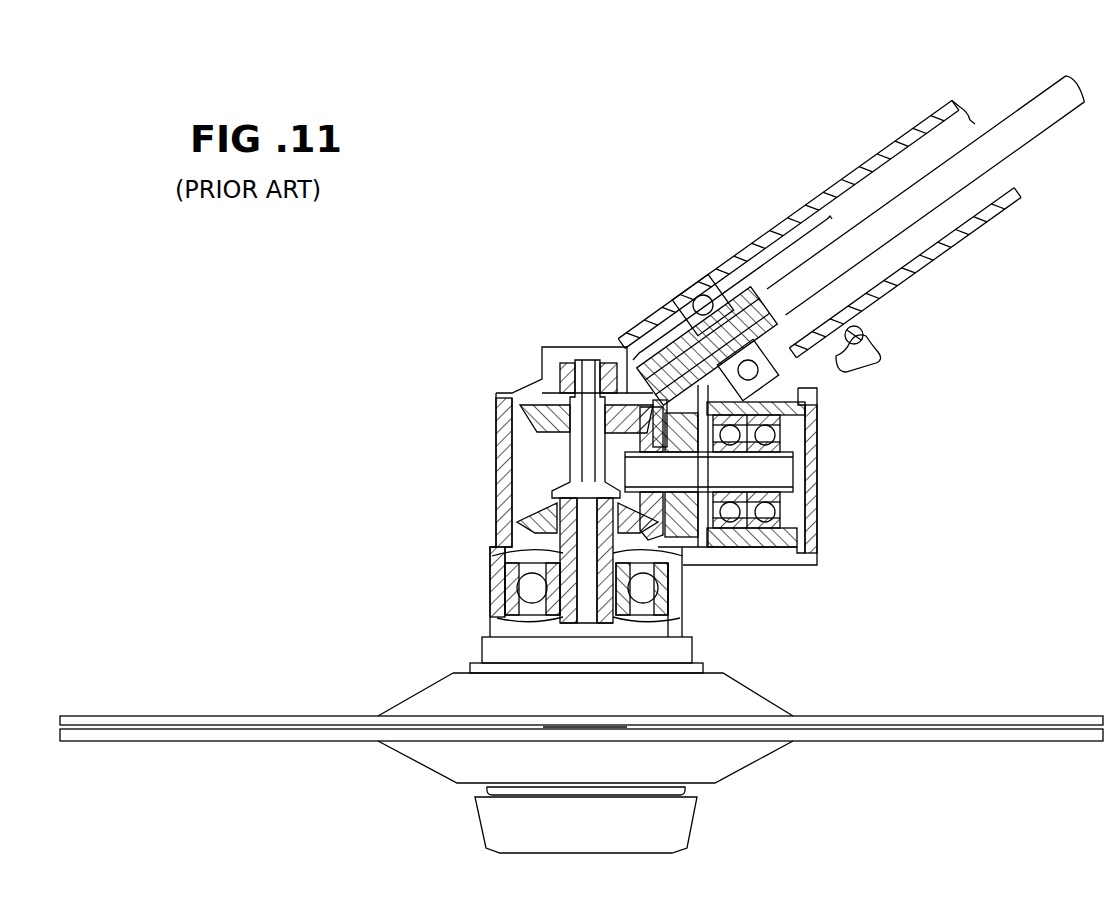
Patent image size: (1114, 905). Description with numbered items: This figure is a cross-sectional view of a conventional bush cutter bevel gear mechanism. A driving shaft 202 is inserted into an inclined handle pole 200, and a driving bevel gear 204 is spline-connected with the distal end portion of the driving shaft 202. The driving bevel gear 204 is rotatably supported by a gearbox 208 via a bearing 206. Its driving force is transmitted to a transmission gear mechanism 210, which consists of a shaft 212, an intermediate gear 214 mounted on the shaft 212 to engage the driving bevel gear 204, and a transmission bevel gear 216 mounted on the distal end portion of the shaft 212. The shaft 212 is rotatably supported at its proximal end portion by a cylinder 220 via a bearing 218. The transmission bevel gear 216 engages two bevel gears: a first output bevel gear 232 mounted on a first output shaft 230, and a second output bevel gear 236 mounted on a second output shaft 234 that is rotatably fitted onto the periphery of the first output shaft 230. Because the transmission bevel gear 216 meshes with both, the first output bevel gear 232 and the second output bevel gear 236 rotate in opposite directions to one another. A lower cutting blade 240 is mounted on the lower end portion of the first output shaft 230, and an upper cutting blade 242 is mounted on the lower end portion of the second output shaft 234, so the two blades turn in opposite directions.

The handle pole 200 is at (900, 150).
The driving shaft 202 is at (1033, 110).
The driving bevel gear 204 is at (653, 342).
The bearing 206 is at (703, 295).
The gearbox 208 is at (620, 340).
The transmission gear mechanism 210 is at (797, 448).
The shaft 212 is at (783, 468).
The intermediate gear 214 is at (660, 547).
The transmission bevel gear 216 is at (690, 527).
The bearing 218 is at (787, 506).
The cylinder 220 is at (795, 538).
The first output shaft 230 is at (580, 453).
The first output bevel gear 232 is at (547, 412).
The second output shaft 234 is at (557, 550).
The second output bevel gear 236 is at (545, 512).
The lower cutting blade 240 is at (925, 732).
The upper cutting blade 242 is at (957, 720).